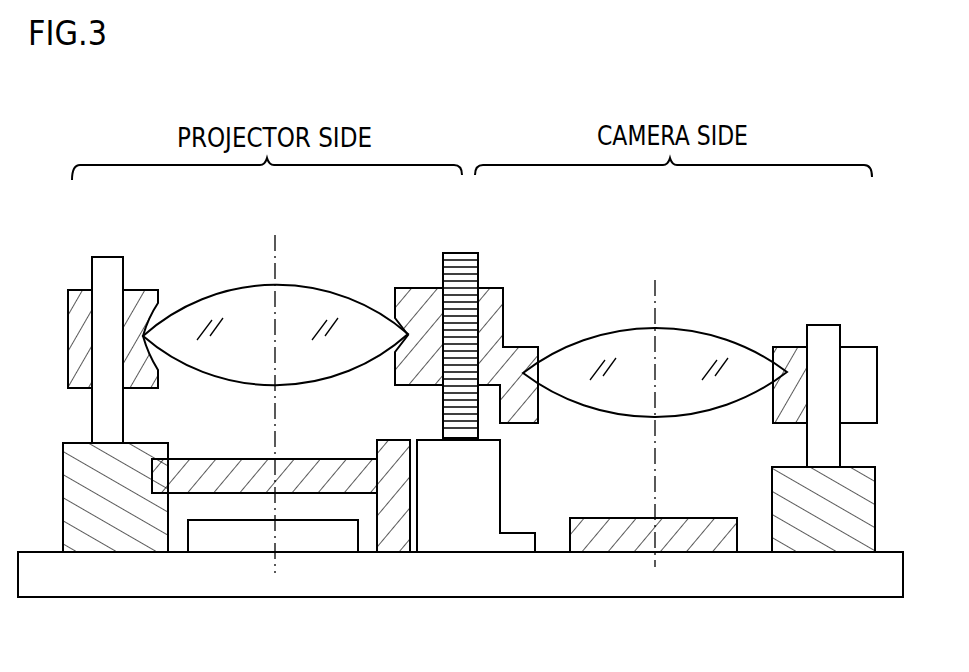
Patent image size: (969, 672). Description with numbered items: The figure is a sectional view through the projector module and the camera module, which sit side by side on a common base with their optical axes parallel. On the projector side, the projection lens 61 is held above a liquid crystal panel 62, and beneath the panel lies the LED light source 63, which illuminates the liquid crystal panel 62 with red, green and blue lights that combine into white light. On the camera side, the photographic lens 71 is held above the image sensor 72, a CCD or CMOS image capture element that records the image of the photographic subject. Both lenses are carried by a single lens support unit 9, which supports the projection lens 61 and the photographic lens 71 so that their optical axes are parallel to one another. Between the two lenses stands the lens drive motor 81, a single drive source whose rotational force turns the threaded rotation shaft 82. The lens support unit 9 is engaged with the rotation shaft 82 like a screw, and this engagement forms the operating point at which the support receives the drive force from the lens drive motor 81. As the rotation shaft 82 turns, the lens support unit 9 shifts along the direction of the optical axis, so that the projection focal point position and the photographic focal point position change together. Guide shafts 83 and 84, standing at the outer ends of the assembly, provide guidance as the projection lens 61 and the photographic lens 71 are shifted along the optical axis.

The lens support unit 9 is at (505, 312).
The projection lens 61 is at (325, 285).
The liquid crystal panel 62 is at (130, 542).
The LED light source 63 is at (231, 538).
The photographic lens 71 is at (717, 332).
The image sensor 72 is at (612, 540).
The lens drive motor 81 is at (435, 540).
The rotation shaft 82 is at (468, 252).
The guide shaft 83 is at (92, 267).
The guide shaft 84 is at (830, 323).